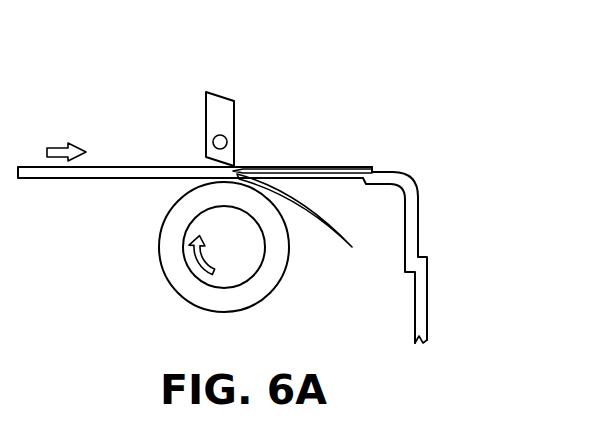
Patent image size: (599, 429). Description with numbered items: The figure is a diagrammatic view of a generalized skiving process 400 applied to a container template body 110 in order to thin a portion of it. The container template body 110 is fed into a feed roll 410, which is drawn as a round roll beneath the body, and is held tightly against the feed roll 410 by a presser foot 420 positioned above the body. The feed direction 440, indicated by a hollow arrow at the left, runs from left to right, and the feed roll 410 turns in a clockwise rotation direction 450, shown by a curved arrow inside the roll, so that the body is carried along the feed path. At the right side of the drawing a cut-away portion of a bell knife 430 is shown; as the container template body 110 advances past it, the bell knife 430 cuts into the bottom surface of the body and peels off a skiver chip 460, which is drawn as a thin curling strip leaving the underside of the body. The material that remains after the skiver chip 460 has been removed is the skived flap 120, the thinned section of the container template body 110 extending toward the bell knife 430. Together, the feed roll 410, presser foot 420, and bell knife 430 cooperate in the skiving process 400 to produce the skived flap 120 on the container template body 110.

The container template body 110 is at (148, 167).
The skived flap 120 is at (320, 166).
The skiving process 400 is at (408, 131).
The feed roll 410 is at (160, 233).
The presser foot 420 is at (213, 93).
The bell knife 430 is at (418, 238).
The feed direction 440 is at (58, 146).
The rotation direction 450 is at (194, 258).
The skiver chip 460 is at (331, 233).